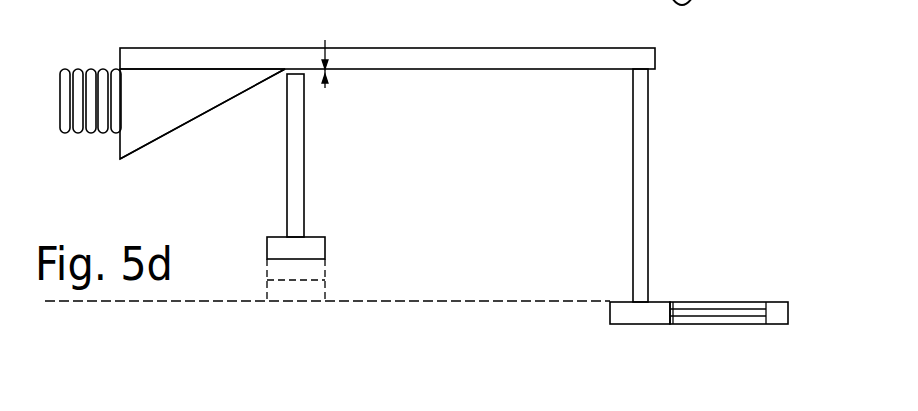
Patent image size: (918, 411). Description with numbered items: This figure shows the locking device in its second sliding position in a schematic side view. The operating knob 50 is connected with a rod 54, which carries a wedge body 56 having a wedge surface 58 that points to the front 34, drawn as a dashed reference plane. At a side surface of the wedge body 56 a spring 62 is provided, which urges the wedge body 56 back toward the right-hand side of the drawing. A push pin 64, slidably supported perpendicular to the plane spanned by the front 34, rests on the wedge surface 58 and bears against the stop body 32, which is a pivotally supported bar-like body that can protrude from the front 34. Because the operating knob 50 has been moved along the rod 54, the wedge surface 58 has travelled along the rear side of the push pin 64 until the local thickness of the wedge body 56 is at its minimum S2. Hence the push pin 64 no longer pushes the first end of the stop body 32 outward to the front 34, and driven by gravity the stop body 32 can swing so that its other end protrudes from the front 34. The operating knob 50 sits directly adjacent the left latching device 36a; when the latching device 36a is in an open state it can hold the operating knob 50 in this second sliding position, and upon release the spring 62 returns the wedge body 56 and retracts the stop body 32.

The stop body 32 is at (323, 240).
The front 34 is at (135, 302).
The left latching device 36a is at (724, 306).
The operating knob 50 is at (623, 312).
The rod 54 is at (447, 57).
The wedge body 56 is at (192, 80).
The wedge surface 58 is at (175, 143).
The spring 62 is at (90, 72).
The push pin 64 is at (295, 154).
The local thickness S2 is at (337, 54).